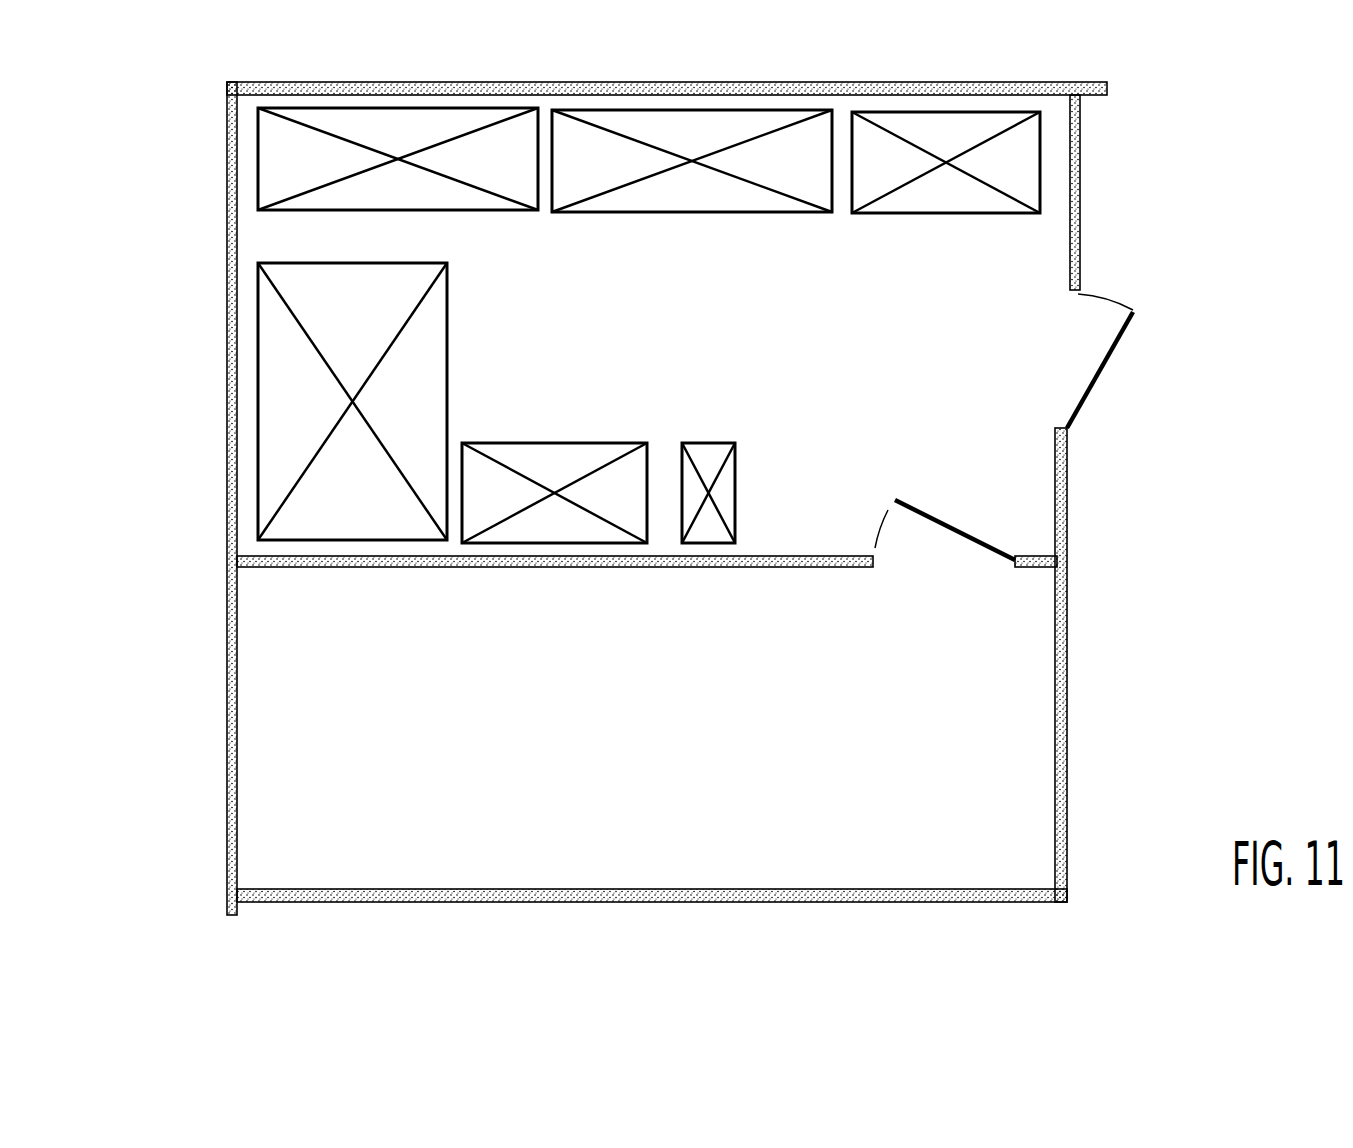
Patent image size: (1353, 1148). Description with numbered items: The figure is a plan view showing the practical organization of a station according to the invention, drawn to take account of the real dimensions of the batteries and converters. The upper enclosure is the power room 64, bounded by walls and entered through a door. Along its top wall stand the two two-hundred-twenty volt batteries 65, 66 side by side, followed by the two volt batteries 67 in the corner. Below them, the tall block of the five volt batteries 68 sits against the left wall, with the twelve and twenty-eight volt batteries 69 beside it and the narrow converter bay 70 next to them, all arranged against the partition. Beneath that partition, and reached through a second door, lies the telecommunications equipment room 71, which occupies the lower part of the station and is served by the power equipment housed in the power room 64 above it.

The power room 64 is at (288, 234).
The 220 V battery 65 is at (492, 202).
The 220 V battery 66 is at (740, 195).
The 2 V batteries 67 is at (963, 197).
The 5 V batteries 68 is at (428, 397).
The 12 and 28 V batteries 69 is at (600, 455).
The converter bay 70 is at (722, 455).
The telecommunications equipment room 71 is at (263, 663).